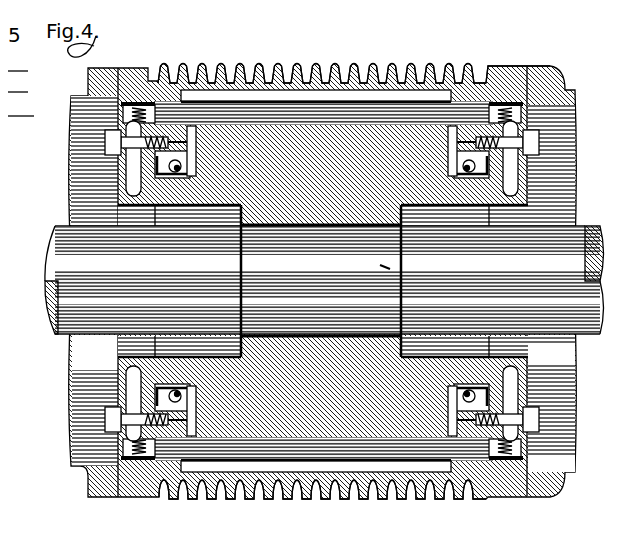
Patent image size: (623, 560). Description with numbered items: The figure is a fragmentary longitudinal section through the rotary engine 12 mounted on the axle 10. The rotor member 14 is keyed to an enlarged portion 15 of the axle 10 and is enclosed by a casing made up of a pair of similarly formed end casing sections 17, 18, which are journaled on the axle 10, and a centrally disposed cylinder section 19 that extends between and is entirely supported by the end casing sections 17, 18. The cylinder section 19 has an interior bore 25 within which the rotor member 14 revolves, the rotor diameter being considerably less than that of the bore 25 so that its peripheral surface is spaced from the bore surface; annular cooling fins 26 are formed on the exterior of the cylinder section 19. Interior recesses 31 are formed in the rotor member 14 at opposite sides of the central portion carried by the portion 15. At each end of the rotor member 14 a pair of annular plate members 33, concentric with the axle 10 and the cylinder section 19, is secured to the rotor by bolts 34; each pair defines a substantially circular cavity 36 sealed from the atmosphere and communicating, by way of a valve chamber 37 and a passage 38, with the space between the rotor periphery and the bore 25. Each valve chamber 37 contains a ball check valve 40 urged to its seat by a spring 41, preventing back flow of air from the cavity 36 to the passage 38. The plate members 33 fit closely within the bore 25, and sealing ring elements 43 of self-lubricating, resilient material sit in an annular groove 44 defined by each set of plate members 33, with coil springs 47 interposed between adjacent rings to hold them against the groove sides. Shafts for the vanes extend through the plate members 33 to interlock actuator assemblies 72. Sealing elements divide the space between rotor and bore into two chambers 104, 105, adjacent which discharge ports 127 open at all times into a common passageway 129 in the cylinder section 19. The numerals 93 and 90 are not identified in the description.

The axle 10 is at (568, 302).
The engine 12 is at (577, 104).
The rotor member 14 is at (406, 217).
The enlarged portion of the axle 15 is at (374, 259).
The end casing section 17 is at (66, 97).
The end casing section 18 is at (541, 73).
The cylinder section 19 is at (481, 60).
The interior bore 25 is at (168, 97).
The annular cooling fins 26 is at (401, 57).
The interior recesses 31 is at (207, 197).
The annular plate members 33 is at (117, 210).
The bolts 34 is at (102, 136).
The circular cavity 36 is at (126, 153).
The valve chamber 37 is at (156, 197).
The passage 38 is at (184, 122).
The ball check valve 40 is at (172, 162).
The spring 41 is at (183, 153).
The annular sealing ring elements 43 is at (487, 96).
The annular groove 44 is at (107, 121).
The coil springs 47 is at (514, 98).
The chamber 104 is at (241, 106).
The chamber 105 is at (171, 432).
The discharge ports 127 is at (298, 100).
The common passageway 129 is at (341, 88).
The unidentified 93 is at (18, 63).
The unidentified 90 is at (18, 84).
The interlock actuator assemblies 72 is at (21, 108).